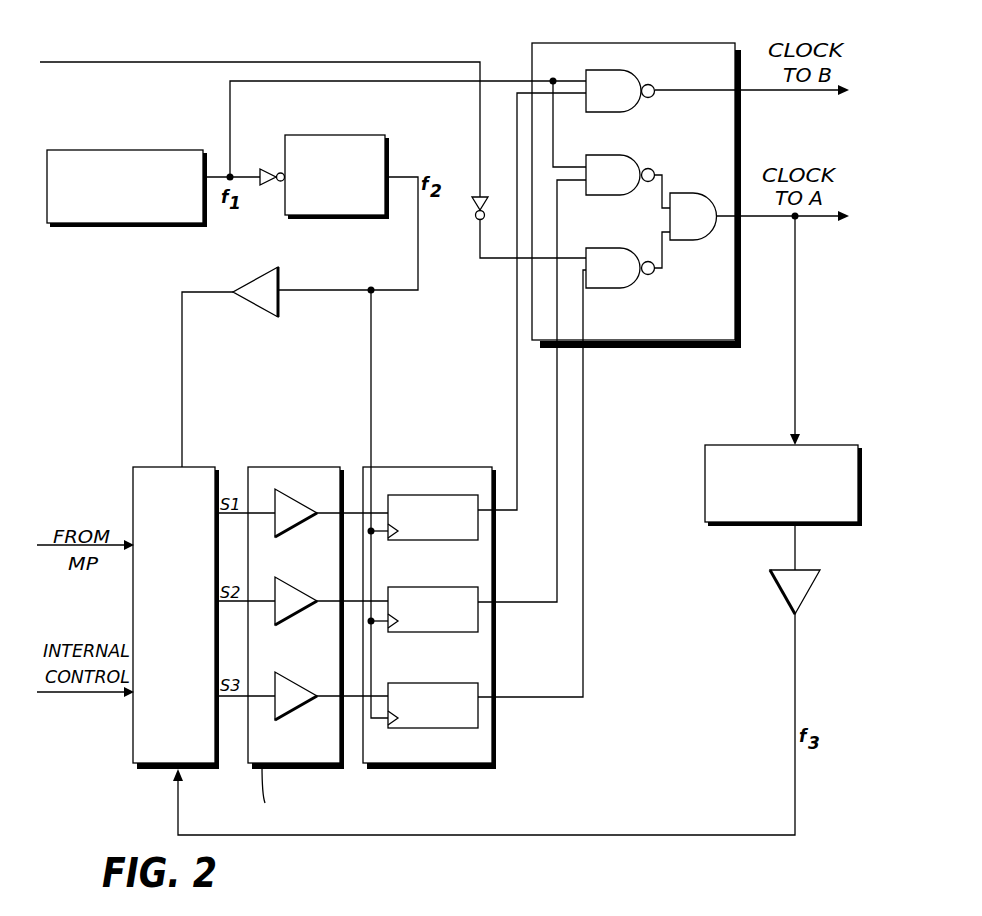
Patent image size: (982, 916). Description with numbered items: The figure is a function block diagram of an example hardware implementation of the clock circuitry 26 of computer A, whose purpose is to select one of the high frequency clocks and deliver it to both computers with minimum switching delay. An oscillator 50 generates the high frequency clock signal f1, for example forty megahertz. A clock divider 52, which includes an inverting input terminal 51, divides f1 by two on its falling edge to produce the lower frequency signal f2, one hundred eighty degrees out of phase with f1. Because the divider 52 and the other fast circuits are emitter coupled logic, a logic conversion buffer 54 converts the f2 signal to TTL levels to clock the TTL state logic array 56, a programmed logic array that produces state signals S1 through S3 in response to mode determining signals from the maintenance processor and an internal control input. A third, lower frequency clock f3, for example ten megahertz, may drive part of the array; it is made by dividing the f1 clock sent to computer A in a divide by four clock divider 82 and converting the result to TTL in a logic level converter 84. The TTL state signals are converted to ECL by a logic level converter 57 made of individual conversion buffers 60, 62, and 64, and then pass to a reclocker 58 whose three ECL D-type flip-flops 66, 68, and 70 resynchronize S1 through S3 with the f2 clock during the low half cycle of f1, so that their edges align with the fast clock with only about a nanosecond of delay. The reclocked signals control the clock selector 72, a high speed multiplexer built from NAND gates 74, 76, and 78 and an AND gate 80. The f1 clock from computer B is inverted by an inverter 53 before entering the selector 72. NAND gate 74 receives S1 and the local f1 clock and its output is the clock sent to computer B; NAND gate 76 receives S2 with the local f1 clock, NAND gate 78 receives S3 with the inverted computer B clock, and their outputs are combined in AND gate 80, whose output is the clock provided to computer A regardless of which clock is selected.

The clock circuitry 26 is at (60, 115).
The oscillator 50 is at (88, 149).
The inverting input terminal 51 is at (263, 173).
The clock divider 52 is at (368, 135).
The inverter 53 is at (472, 201).
The logic conversion buffer 54 is at (266, 275).
The state logic array 56 is at (145, 470).
The logic level converter 57 is at (270, 467).
The reclocker 58 is at (428, 467).
The conversion buffer 60 is at (293, 501).
The conversion buffer 62 is at (299, 590).
The conversion buffer 64 is at (298, 682).
The D-type flip-flop 66 is at (467, 495).
The D-type flip-flop 68 is at (437, 587).
The D-type flip-flop 70 is at (441, 683).
The clock selector 72 is at (738, 58).
The NAND gate 74 is at (607, 110).
The NAND gate 76 is at (606, 194).
The NAND gate 78 is at (628, 280).
The AND gate 80 is at (677, 194).
The clock divider 82 is at (838, 445).
The logic level converter 84 is at (788, 598).